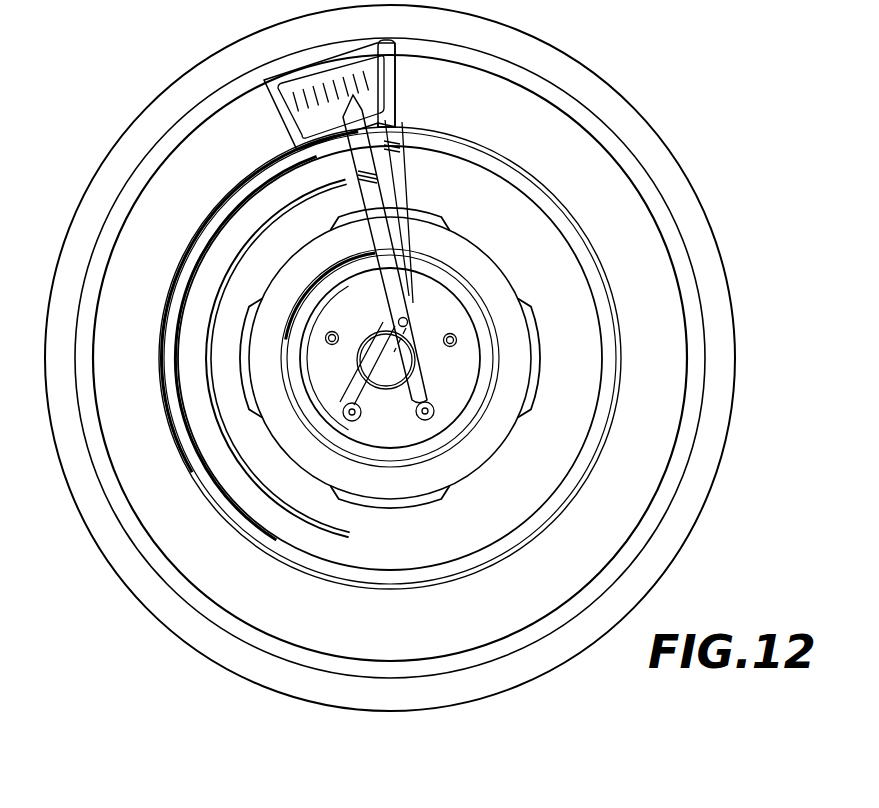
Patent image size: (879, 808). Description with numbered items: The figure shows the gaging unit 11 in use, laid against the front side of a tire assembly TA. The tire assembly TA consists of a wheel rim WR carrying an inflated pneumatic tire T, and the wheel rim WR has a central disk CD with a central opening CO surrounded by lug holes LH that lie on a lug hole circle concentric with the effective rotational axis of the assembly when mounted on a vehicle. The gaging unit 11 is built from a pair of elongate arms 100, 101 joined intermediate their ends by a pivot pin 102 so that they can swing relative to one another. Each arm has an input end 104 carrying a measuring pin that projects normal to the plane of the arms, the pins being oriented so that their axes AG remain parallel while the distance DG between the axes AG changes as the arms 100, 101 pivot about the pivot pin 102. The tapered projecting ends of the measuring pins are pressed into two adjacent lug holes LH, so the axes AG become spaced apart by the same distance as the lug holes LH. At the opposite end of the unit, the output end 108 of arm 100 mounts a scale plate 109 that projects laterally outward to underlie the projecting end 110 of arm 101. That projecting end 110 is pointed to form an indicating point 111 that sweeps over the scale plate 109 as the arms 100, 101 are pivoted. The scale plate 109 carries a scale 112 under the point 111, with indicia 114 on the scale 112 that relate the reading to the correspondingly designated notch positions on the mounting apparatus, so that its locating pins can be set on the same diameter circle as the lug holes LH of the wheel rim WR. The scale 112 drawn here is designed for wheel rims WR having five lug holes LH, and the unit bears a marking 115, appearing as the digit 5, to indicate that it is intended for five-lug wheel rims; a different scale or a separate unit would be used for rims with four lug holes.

The tire assembly TA is at (740, 354).
The pneumatic tire T is at (716, 402).
The wheel rim WR is at (600, 468).
The central disk CD is at (408, 500).
The central opening CO is at (362, 352).
The lug holes LH is at (342, 318).
The pivot pin 102 is at (398, 322).
The input end 104 is at (362, 391).
The pin axes AG is at (356, 414).
The distance between pin axes DG is at (362, 411).
The output end 108 is at (391, 126).
The scale plate 109 is at (373, 56).
The projecting end 110 is at (352, 150).
The indicating point 111 is at (331, 100).
The scale 112 is at (290, 112).
The indicia 114 is at (330, 60).
The marking 115 is at (373, 241).
The marker 5 is at (383, 242).
The gaging unit 11 is at (415, 272).
The elongate arm 100 is at (401, 201).
The elongate arm 101 is at (369, 203).